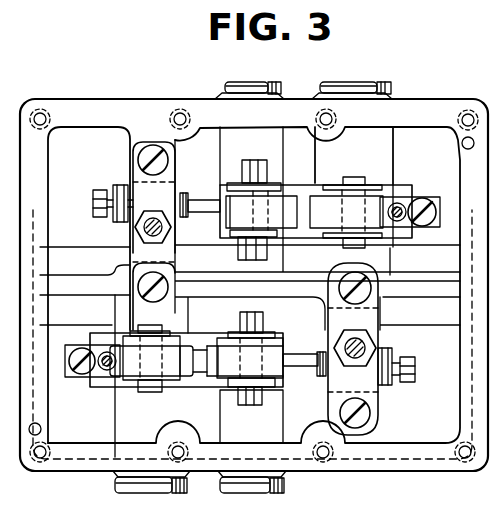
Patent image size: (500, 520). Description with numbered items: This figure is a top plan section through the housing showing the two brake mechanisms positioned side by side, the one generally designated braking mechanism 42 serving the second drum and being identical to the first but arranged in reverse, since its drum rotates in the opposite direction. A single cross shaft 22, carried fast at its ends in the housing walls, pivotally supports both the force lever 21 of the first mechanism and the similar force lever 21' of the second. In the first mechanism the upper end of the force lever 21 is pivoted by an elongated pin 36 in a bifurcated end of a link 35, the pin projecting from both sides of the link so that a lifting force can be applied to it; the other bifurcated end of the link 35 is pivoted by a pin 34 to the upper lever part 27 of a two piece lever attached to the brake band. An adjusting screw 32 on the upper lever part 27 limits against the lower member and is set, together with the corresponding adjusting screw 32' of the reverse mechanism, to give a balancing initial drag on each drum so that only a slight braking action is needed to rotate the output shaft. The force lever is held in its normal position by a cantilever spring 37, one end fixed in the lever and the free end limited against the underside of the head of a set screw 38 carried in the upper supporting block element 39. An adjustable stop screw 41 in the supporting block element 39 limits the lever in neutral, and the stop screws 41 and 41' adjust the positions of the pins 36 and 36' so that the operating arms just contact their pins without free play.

The force lever 21 is at (204, 374).
The force lever 21' is at (296, 202).
The cross shaft 22 is at (278, 82).
The upper half of two piece lever 27 is at (176, 372).
The adjusting screw 32 is at (92, 381).
The adjusting screw 32' is at (418, 195).
The pin 34 is at (150, 326).
The link 35 is at (196, 376).
The pin 36 is at (266, 317).
The pin 36' is at (275, 257).
The cantilever spring 37 is at (291, 346).
The set screw 38 is at (364, 348).
The upper supporting block element 39 is at (366, 386).
The adjustable stop screw 41 is at (416, 366).
The adjustable stop screw 41' is at (95, 197).
The braking mechanism 42 is at (337, 178).